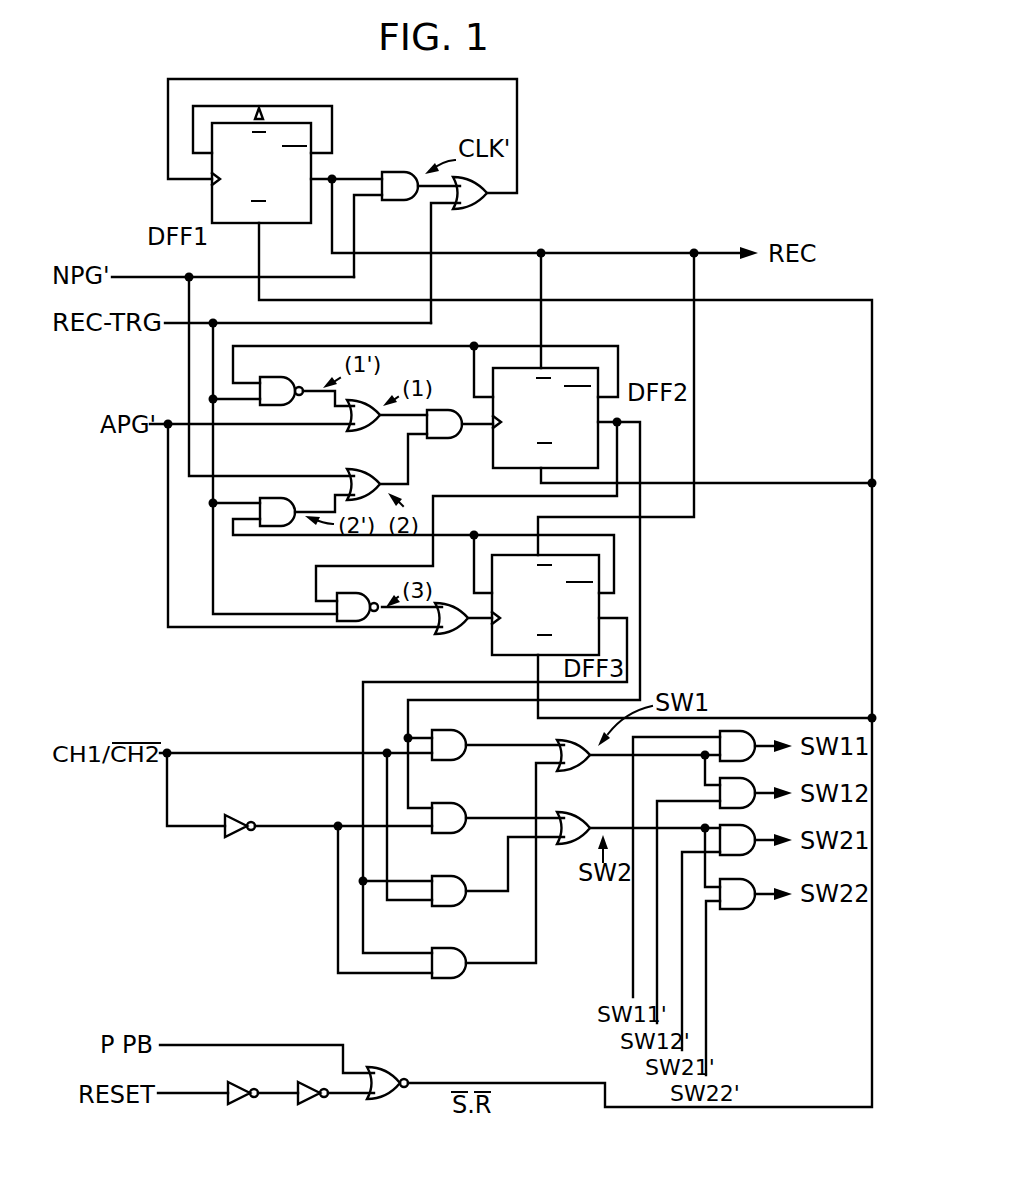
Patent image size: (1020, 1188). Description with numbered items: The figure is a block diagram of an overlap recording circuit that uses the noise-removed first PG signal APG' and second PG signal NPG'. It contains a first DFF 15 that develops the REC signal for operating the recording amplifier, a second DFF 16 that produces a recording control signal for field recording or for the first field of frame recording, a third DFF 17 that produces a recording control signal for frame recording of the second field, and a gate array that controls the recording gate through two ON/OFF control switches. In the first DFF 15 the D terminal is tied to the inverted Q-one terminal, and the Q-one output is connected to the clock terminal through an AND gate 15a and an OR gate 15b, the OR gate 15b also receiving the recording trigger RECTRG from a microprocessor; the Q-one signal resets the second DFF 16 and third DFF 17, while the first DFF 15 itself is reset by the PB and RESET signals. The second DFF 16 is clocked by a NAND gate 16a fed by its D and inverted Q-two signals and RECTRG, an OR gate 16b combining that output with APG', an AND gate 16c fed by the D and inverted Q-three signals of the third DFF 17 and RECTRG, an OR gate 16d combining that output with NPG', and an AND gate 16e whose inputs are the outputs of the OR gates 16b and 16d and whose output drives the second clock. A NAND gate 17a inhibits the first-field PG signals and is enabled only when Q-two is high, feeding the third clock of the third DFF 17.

The first DFF 15 is at (212, 191).
The AND gate 15a is at (402, 172).
The OR gate 15b is at (484, 207).
The second DFF 16 is at (600, 418).
The NAND gate 16a is at (290, 377).
The OR gate 16b is at (371, 397).
The AND gate 16c is at (286, 498).
The OR gate 16d is at (383, 459).
The AND gate 16e is at (453, 438).
The third DFF 17 is at (600, 607).
The NAND gate 17a is at (337, 607).